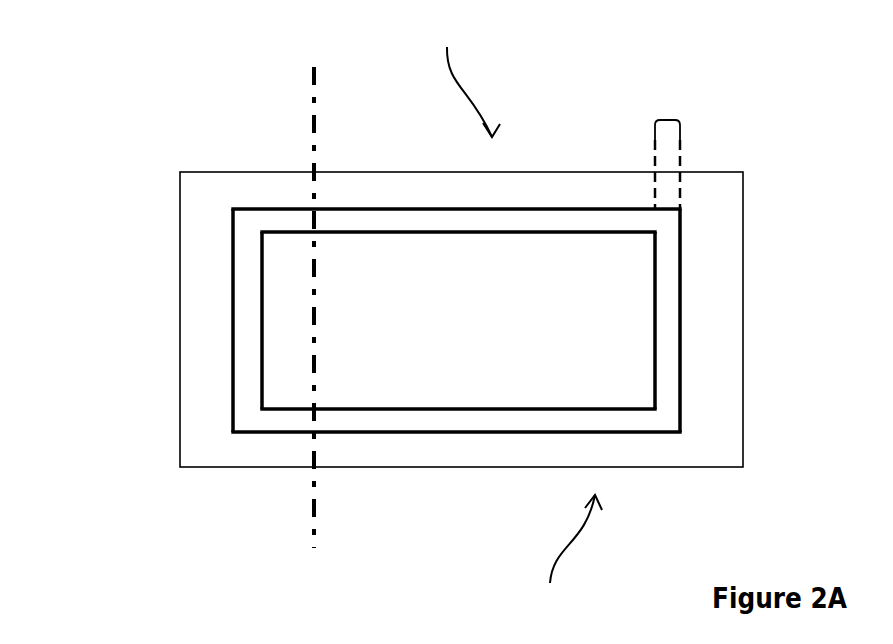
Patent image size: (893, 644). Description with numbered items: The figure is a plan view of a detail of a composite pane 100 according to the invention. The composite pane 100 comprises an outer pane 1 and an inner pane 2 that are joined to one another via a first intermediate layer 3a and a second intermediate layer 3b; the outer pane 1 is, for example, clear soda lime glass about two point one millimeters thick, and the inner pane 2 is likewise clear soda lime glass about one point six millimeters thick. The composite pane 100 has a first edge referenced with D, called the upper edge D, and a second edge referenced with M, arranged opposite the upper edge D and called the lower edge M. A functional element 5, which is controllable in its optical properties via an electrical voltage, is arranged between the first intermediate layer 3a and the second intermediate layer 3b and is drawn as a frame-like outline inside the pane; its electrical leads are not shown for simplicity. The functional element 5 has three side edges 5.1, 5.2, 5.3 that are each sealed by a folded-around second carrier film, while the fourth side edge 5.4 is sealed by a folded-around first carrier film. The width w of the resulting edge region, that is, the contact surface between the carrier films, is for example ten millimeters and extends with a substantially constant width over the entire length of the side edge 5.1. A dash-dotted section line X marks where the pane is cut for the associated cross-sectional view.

The composite pane 100 is at (223, 92).
The outer pane 1 is at (390, 285).
The inner pane 2 is at (390, 285).
The first intermediate layer 3a is at (390, 285).
The second intermediate layer 3b is at (179, 182).
The functional element 5 is at (262, 285).
The side edge 5.1 is at (403, 438).
The side edge 5.2 is at (690, 353).
The side edge 5.3 is at (399, 202).
The fourth side edge 5.4 is at (227, 385).
The section line X-X' X is at (315, 312).
The upper edge D is at (472, 75).
The lower edge M is at (571, 554).
The width w is at (667, 120).